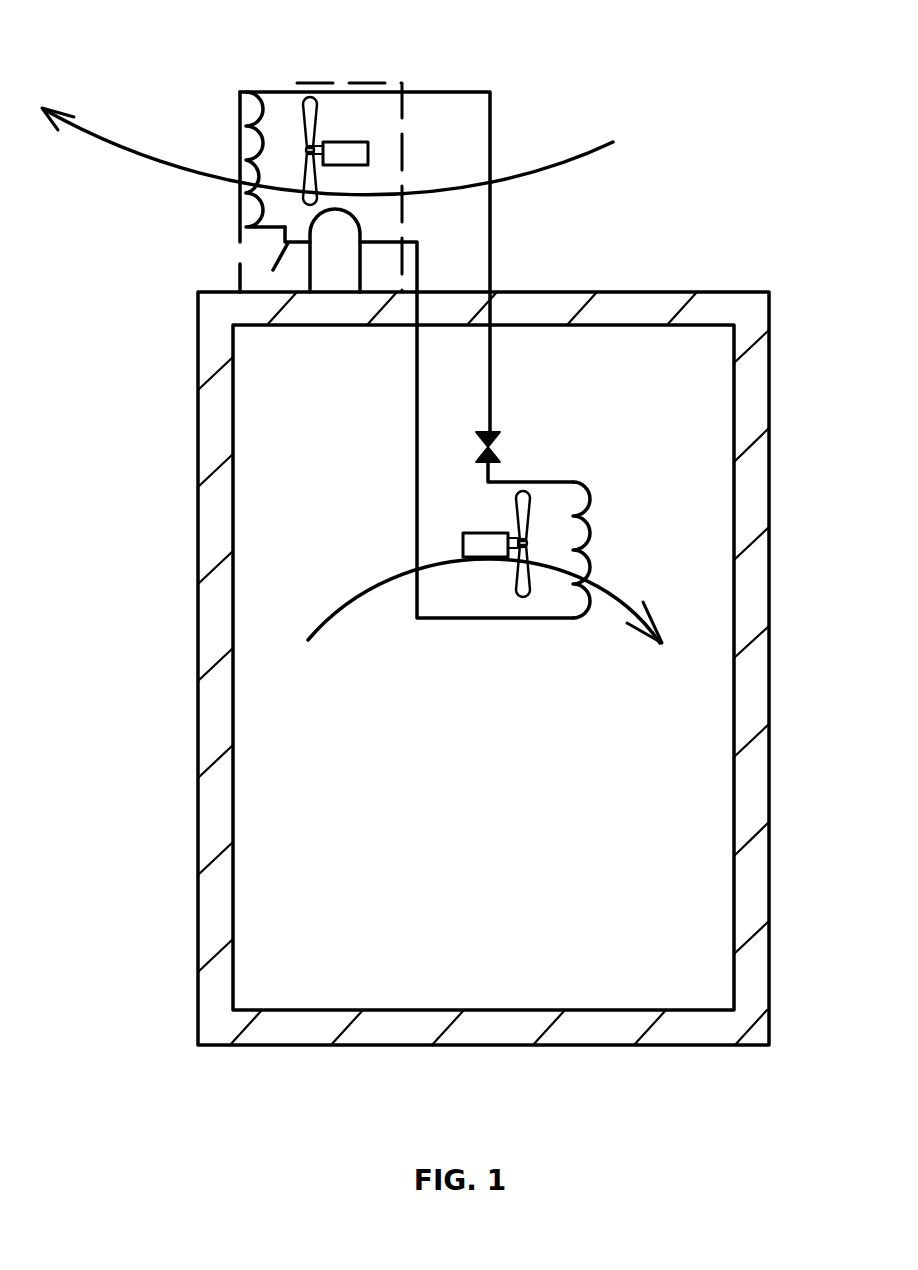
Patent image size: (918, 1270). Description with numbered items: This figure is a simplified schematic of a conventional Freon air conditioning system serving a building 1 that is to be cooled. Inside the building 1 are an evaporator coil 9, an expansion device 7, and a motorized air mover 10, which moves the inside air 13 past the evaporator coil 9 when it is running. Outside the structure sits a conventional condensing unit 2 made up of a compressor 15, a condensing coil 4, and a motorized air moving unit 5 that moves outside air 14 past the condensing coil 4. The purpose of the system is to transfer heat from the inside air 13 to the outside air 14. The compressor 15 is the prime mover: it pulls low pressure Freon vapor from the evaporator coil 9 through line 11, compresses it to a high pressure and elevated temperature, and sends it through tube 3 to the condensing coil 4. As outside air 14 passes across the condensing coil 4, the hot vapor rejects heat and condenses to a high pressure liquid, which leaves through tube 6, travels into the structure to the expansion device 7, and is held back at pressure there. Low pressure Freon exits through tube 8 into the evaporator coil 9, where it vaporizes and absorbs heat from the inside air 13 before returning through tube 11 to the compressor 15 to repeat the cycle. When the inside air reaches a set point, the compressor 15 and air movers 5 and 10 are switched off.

The building 1 is at (215, 678).
The condensing unit 2 is at (240, 264).
The tube 3 is at (273, 270).
The condensing coil 4 is at (250, 127).
The motorized air moving unit 5 is at (312, 130).
The tube 6 is at (432, 92).
The expansion device 7 is at (505, 445).
The tube 8 is at (508, 482).
The evaporator coil 9 is at (592, 490).
The motorized air mover 10 is at (500, 535).
The line 11 is at (415, 415).
The inside air 13 is at (367, 590).
The outside air 14 is at (77, 132).
The compressor 15 is at (315, 277).